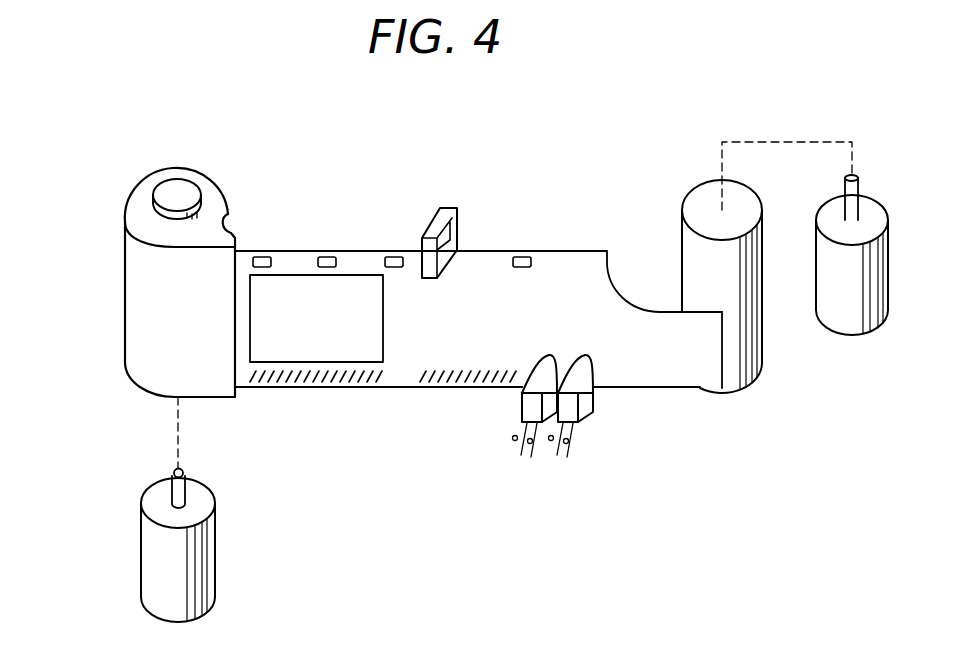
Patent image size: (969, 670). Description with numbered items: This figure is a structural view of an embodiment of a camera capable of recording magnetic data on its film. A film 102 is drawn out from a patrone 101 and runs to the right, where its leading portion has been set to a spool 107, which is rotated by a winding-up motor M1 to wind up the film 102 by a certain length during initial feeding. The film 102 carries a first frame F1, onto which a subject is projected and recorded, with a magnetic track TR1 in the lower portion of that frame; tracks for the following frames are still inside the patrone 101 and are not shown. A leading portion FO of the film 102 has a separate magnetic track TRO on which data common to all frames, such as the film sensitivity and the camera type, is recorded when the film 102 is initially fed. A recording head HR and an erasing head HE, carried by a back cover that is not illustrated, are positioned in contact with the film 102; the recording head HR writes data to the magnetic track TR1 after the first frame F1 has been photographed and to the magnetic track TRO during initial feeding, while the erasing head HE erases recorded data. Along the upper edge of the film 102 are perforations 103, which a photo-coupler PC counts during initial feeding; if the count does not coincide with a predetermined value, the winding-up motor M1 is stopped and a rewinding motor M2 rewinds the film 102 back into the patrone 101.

The patrone 101 is at (147, 308).
The film 102 is at (567, 263).
The perforations 103 is at (262, 252).
The spool 107 is at (700, 256).
The photo-coupler PC is at (442, 220).
The leading portion FO is at (497, 297).
The first frame F1 is at (295, 347).
The magnetic track TR1 is at (357, 373).
The magnetic track TRO is at (450, 388).
The erasing head HE is at (540, 437).
The recording head HR is at (585, 402).
The winding-up motor M1 is at (860, 310).
The rewinding motor M2 is at (192, 560).